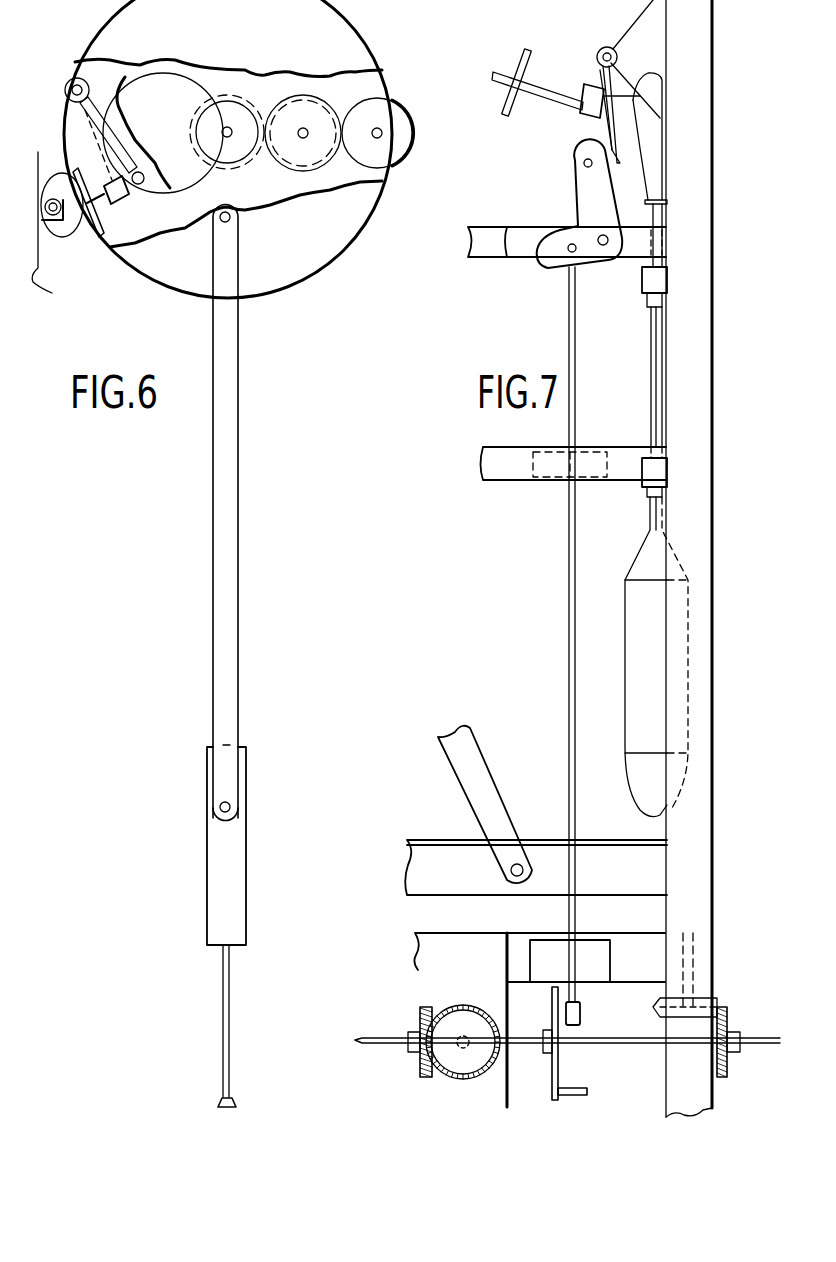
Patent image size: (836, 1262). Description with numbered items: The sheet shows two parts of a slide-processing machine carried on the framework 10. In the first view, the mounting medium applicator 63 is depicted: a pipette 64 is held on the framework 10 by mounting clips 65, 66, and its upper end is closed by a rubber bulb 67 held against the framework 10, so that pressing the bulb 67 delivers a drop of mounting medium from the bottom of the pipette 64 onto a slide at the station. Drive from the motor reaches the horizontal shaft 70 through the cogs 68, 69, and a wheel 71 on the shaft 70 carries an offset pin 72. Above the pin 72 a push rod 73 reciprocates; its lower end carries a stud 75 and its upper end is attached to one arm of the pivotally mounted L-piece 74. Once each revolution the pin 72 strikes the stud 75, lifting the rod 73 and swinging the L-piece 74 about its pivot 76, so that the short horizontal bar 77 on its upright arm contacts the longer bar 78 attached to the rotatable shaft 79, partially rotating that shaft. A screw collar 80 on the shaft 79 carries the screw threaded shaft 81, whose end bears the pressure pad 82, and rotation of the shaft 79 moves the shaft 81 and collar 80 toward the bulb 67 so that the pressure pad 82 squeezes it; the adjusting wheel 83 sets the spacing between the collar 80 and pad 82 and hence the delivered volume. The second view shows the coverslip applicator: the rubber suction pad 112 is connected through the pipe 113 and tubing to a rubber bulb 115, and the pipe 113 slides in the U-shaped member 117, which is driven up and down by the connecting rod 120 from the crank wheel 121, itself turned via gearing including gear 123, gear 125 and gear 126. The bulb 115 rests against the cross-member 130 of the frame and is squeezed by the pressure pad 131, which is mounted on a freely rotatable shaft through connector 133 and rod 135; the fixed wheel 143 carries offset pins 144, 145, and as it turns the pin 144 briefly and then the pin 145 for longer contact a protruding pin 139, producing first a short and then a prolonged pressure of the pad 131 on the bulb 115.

In FIG. 7, the framework 10 is at (712, 387).
In FIG. 7, the mounting medium applicator 63 is at (650, 638).
In FIG. 7, the pipette 64 is at (630, 580).
In FIG. 7, the mounting clip 65 is at (663, 473).
In FIG. 7, the mounting clip 66 is at (662, 280).
In FIG. 7, the rubber bulb 67 is at (655, 145).
In FIG. 7, the cog 68 is at (465, 1083).
In FIG. 7, the cog 69 is at (420, 1072).
In FIG. 7, the horizontal shaft 70 is at (634, 1045).
In FIG. 7, the wheel 71 is at (552, 1072).
In FIG. 7, the offset pin 72 is at (567, 1088).
In FIG. 7, the push rod 73 is at (576, 817).
In FIG. 7, the L-piece 74 is at (587, 202).
In FIG. 7, the stud 75 is at (580, 1010).
In FIG. 7, the pivot 76 is at (604, 246).
In FIG. 7, the short horizontal bar 77 is at (584, 163).
In FIG. 7, the longer bar 78 is at (640, 96).
In FIG. 7, the rotatable shaft 79 is at (605, 47).
In FIG. 7, the screw collar 80 is at (581, 113).
In FIG. 7, the screw threaded shaft 81 is at (540, 90).
In FIG. 7, the pressure pad 82 is at (660, 118).
In FIG. 7, the adjusting wheel 83 is at (528, 48).
In FIG. 6, the rubber suction pad 112 is at (220, 1103).
In FIG. 6, the pipe 113 is at (222, 1015).
In FIG. 6, the rubber bulb 115 is at (52, 152).
In FIG. 6, the U-shaped member 117 is at (218, 860).
In FIG. 6, the connecting rod 120 is at (218, 545).
In FIG. 6, the crank wheel 121 is at (297, 267).
In FIG. 6, the gear 123 is at (233, 100).
In FIG. 6, the gear 125 is at (303, 173).
In FIG. 6, the gear 126 is at (390, 153).
In FIG. 6, the cross-member 130 is at (55, 238).
In FIG. 6, the pressure pad 131 is at (97, 237).
In FIG. 6, the connector 133 is at (124, 199).
In FIG. 6, the rod 135 is at (63, 100).
In FIG. 6, the protruding pin 139 is at (108, 73).
In FIG. 6, the fixed wheel 143 is at (172, 83).
In FIG. 6, the offset pin 144 is at (152, 150).
In FIG. 6, the offset pin 145 is at (198, 158).